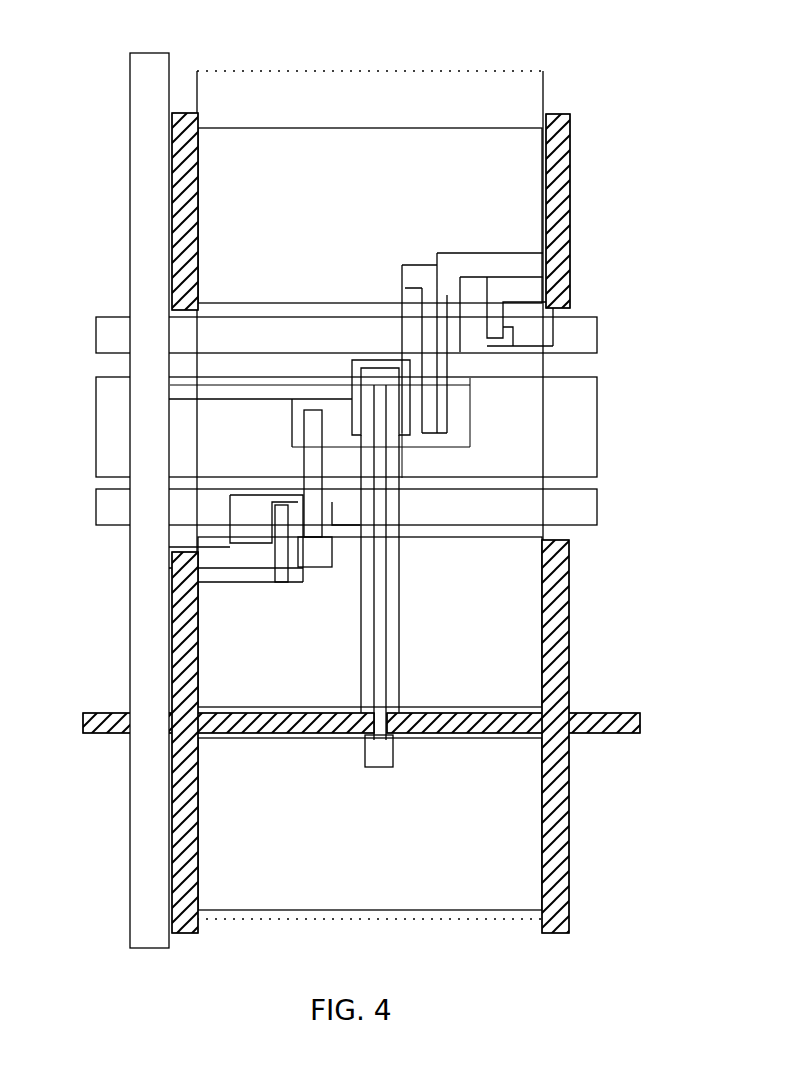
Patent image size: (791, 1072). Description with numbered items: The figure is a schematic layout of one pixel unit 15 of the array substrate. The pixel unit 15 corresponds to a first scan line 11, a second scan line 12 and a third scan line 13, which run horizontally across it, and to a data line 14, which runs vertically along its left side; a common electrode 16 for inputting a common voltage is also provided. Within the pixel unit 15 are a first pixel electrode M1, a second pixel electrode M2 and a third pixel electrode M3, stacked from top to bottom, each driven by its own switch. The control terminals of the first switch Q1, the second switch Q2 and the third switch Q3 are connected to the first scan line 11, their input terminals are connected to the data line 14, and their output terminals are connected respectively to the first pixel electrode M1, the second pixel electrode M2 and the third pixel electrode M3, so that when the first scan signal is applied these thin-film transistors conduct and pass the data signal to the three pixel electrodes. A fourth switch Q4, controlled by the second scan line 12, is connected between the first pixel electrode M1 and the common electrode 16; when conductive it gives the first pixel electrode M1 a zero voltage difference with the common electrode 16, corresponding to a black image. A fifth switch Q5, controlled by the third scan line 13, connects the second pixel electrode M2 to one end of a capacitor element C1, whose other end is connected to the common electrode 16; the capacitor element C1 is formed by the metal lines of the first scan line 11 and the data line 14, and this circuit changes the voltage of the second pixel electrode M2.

The first scan line 11 is at (598, 420).
The second scan line 12 is at (598, 325).
The third scan line 13 is at (598, 500).
The data line 14 is at (145, 53).
The pixel unit 15 is at (495, 71).
The common electrode 16 is at (571, 136).
The first switch Q1 is at (440, 300).
The second switch Q2 is at (305, 460).
The third switch Q3 is at (360, 395).
The fourth switch Q4 is at (507, 278).
The fifth switch Q5 is at (232, 515).
The capacitor element C1 is at (165, 545).
The first pixel electrode M1 is at (370, 215).
The second pixel electrode M2 is at (370, 622).
The third pixel electrode M3 is at (370, 824).